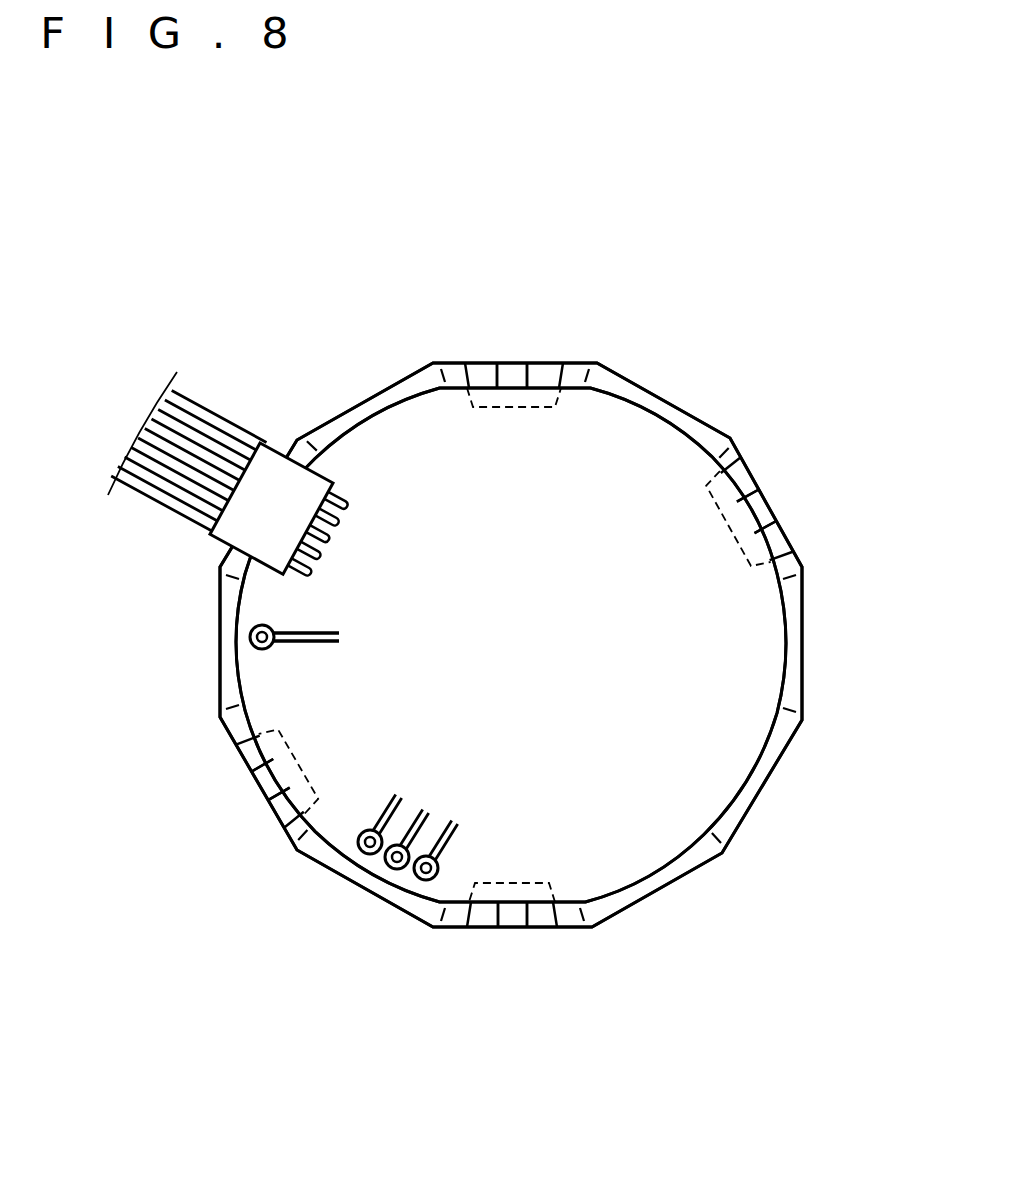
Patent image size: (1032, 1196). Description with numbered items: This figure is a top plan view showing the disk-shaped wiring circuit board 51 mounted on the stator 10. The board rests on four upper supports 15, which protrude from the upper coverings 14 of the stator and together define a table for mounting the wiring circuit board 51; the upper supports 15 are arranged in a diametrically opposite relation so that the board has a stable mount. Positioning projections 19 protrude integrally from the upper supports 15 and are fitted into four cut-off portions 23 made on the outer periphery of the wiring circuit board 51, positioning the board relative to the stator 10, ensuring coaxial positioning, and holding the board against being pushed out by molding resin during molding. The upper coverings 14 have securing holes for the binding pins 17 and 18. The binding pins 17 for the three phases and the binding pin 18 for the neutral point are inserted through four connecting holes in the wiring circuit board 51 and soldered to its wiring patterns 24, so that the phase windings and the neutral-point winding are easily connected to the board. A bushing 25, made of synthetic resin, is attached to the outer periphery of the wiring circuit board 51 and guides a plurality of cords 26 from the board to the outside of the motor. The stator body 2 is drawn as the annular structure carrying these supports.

The annular body 2 is at (667, 412).
The stator 10 is at (617, 368).
The upper covering 14 is at (422, 380).
The upper support 15 is at (543, 373).
The binding pin 17 is at (364, 892).
The binding pin 18 is at (250, 637).
The positioning projection 19 is at (515, 373).
The cut-off portion 23 is at (448, 387).
The wiring pattern 24 is at (305, 647).
The bushing 25 is at (278, 475).
The cord 26 is at (143, 492).
The wiring circuit board 51 is at (720, 770).